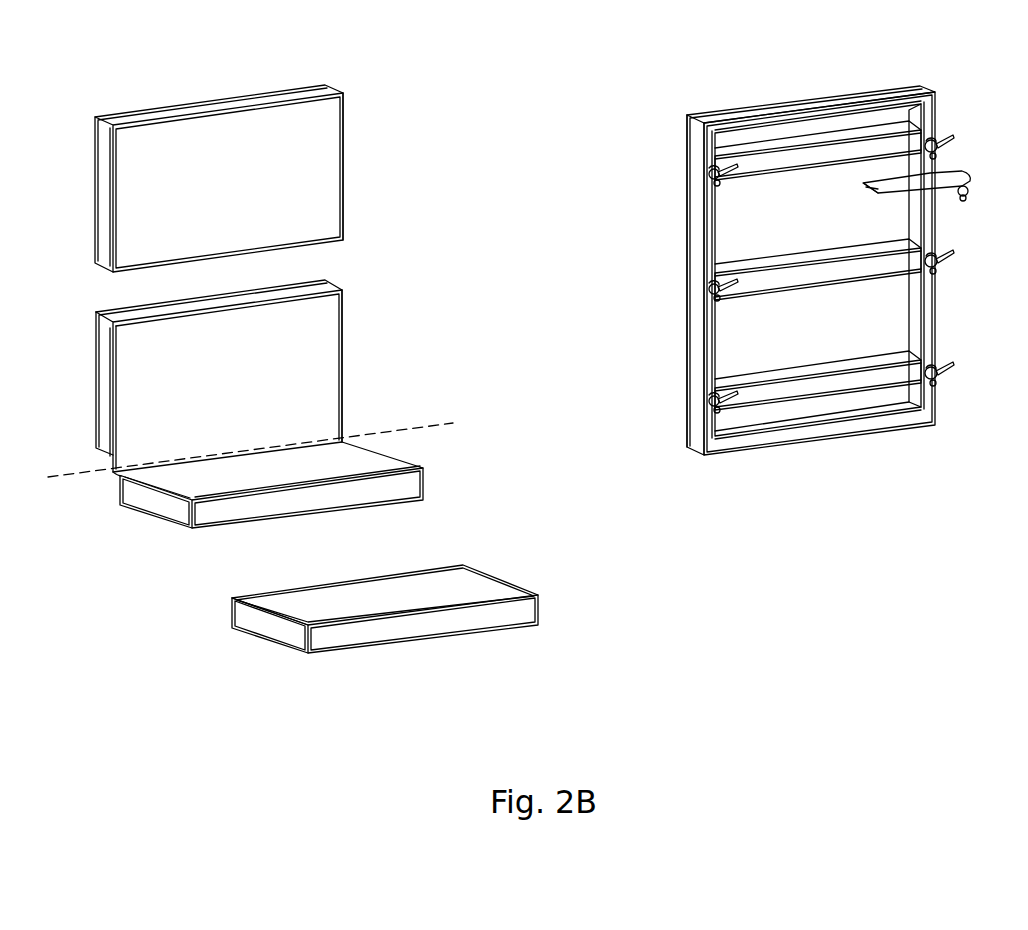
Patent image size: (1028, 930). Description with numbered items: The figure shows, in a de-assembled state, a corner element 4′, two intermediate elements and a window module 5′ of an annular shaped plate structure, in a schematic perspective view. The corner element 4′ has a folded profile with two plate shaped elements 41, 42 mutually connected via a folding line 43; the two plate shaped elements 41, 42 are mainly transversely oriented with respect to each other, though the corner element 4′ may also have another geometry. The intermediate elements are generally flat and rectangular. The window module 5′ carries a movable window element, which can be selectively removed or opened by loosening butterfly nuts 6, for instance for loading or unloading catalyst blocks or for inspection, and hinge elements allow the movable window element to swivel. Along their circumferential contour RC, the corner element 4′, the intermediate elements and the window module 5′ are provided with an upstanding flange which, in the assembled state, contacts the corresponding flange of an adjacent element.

The corner element 4′ is at (270, 394).
The plate shaped element 41 is at (304, 350).
The plate shaped element 42 is at (364, 467).
The folding line 43 is at (452, 425).
The circumferential contour RC is at (344, 180).
The window module 5′ is at (823, 236).
The butterfly nut 6 is at (705, 178).